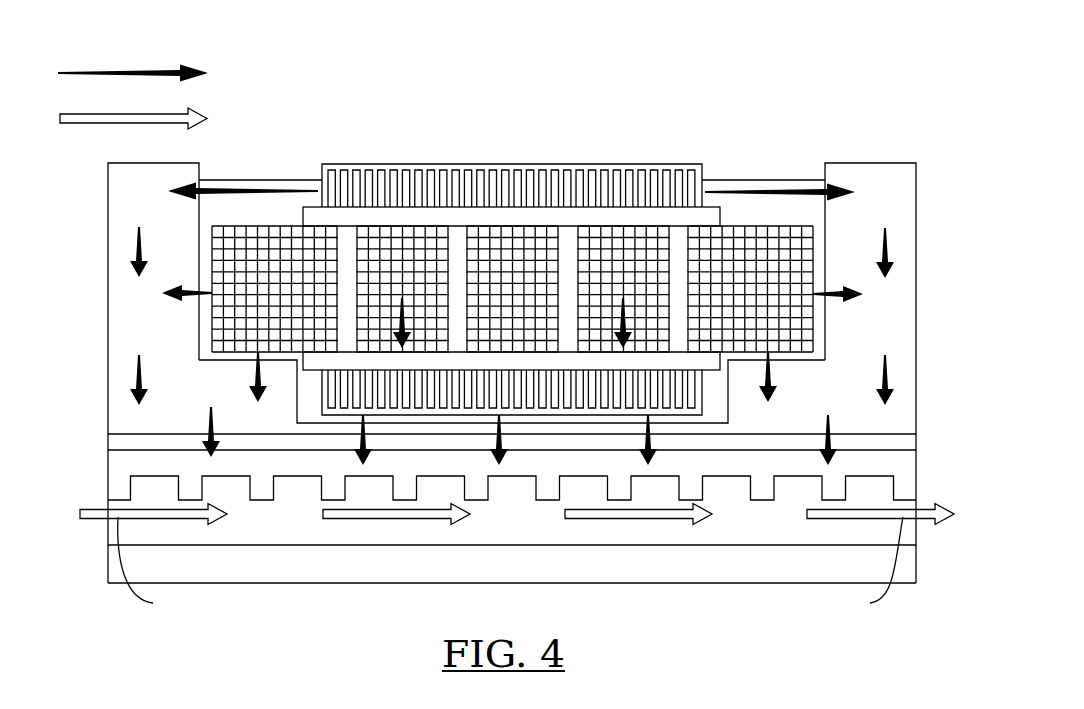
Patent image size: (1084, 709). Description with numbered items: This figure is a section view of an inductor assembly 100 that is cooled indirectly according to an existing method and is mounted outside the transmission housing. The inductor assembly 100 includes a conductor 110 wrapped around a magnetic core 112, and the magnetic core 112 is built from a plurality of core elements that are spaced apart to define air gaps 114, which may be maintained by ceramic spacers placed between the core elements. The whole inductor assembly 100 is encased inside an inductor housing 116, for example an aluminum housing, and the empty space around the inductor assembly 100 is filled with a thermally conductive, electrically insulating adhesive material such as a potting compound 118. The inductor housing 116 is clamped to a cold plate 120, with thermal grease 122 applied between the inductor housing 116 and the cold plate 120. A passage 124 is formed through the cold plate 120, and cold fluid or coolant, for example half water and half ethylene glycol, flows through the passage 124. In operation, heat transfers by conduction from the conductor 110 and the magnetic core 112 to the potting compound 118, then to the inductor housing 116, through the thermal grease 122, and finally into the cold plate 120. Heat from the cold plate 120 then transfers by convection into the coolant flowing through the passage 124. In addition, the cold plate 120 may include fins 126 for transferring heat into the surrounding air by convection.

The inductor assembly 100 is at (823, 100).
The conductor 110 is at (608, 166).
The magnetic core 112 is at (253, 226).
The air gaps 114 is at (677, 242).
The inductor housing 116 is at (916, 187).
The potting compound 118 is at (790, 180).
The cold plate 120 is at (108, 482).
The thermal grease 122 is at (907, 443).
The passage 124 is at (597, 543).
The fins 126 is at (332, 500).